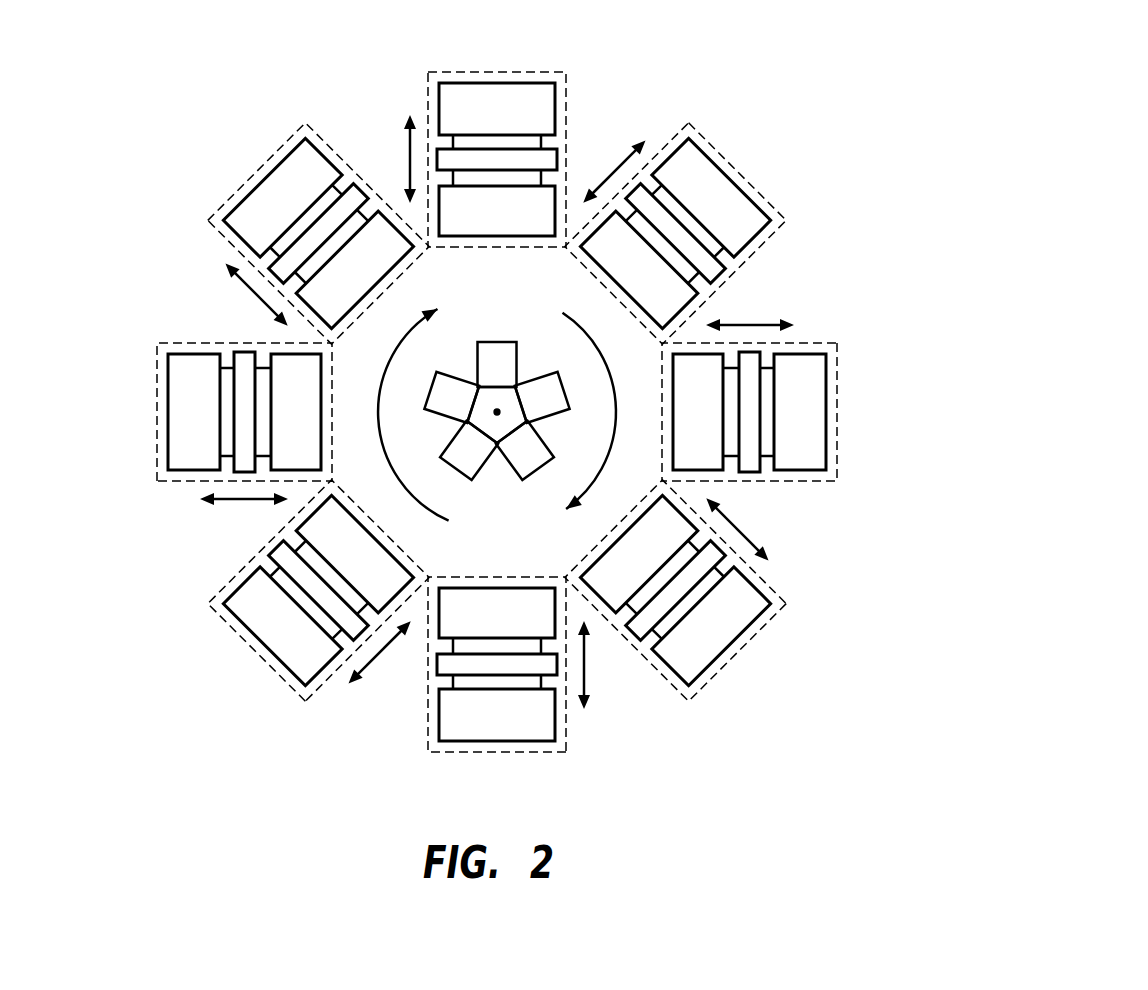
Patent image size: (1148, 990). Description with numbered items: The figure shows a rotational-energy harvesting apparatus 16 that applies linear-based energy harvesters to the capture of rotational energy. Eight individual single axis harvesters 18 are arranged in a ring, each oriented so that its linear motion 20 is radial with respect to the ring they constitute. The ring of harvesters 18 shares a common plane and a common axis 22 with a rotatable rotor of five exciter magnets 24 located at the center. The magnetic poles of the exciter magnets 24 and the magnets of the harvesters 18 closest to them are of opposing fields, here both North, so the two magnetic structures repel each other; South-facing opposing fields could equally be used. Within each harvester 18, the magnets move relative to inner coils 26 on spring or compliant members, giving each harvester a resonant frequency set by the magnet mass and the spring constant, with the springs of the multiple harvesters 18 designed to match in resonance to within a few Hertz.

The rotational-energy harvesting apparatus 16 is at (805, 83).
The single axis harvester 18 is at (760, 192).
The linear motion 20 is at (757, 325).
The common axis 22 is at (498, 416).
The exciter magnets 24 is at (545, 373).
The inner coils 26 is at (557, 160).